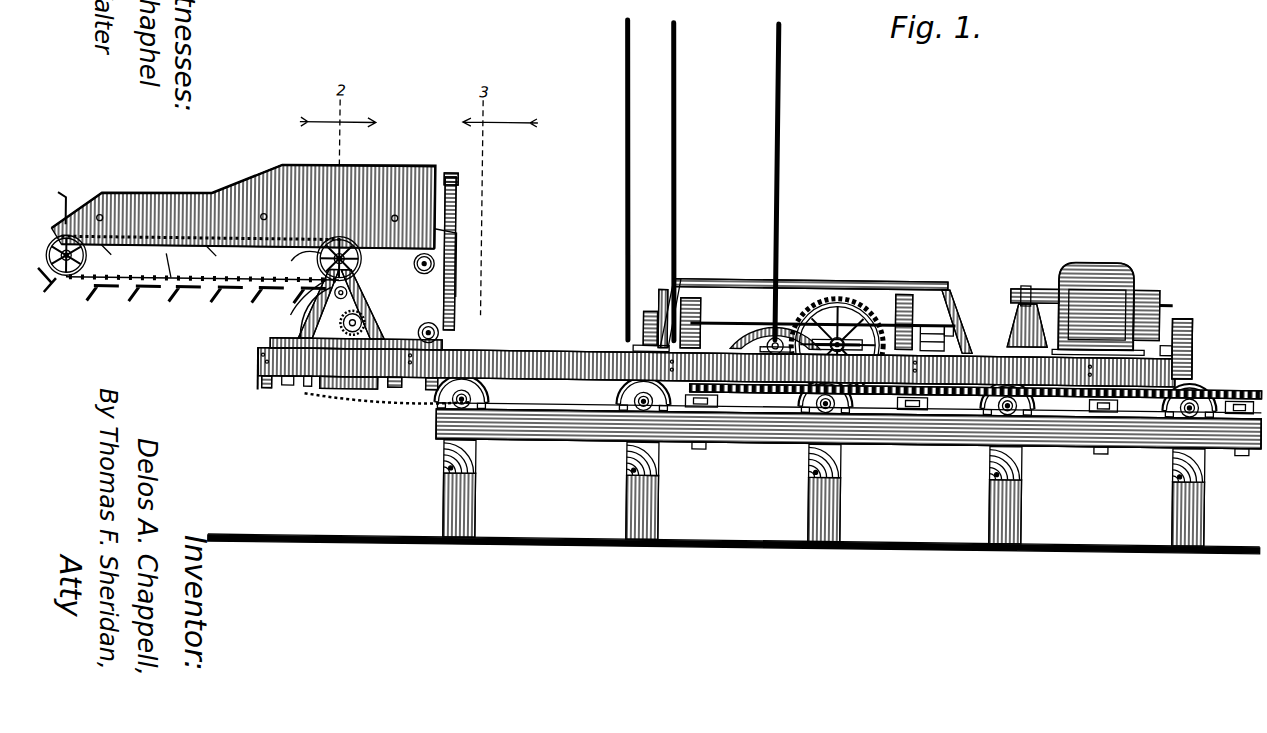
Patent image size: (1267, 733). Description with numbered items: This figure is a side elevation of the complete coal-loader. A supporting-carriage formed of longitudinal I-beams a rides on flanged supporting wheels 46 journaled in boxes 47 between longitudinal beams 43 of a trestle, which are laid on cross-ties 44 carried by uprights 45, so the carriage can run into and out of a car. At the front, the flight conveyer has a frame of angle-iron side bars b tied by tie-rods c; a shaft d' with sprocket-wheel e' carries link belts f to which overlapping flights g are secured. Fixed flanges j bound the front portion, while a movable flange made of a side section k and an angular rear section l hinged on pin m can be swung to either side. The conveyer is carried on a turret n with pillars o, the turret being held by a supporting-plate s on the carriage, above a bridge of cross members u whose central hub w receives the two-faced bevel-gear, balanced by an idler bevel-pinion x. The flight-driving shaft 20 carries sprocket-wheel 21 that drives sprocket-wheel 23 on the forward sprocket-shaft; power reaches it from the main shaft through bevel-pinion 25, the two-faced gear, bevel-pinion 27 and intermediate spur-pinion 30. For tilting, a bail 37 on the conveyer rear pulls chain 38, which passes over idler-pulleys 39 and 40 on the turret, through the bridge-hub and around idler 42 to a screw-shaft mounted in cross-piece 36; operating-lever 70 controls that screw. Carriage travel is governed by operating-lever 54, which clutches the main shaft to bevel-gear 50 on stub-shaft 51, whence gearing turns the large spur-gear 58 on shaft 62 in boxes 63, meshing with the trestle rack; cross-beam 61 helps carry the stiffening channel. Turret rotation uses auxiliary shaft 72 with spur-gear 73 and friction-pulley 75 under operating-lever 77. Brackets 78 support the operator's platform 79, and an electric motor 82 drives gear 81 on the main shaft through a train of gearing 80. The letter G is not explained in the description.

The I-beam a is at (1180, 365).
The side bar b is at (255, 252).
The tie-rod c is at (160, 259).
The rotatable shaft d' is at (463, 260).
The sprocket-wheel e' is at (458, 264).
The link belt f is at (433, 290).
The flight g is at (112, 300).
The fixed flange j is at (136, 212).
The side section of movable flange k is at (266, 180).
The angular rear section of movable flange l is at (402, 182).
The pin m is at (454, 170).
The turret n is at (258, 385).
The pillar o is at (352, 300).
The supporting-plate s is at (335, 350).
The cross member u is at (430, 393).
The central hub portion w is at (330, 393).
The idler bevel-pinion x is at (288, 390).
The conveyor guide G is at (297, 260).
The flight-driving shaft 20 is at (337, 244).
The sprocket-wheel 21 is at (290, 288).
The sprocket-wheel 23 is at (66, 283).
The bevel-pinion 25 is at (395, 391).
The bevel-pinion 27 is at (300, 330).
The intermediate spur-pinion 30 is at (295, 318).
The cross-piece 36 is at (643, 320).
The bail 37 is at (456, 296).
The chain 38 is at (345, 420).
The idler-pulley 39 is at (438, 340).
The idler-pulley 40 is at (364, 320).
The idler 42 is at (355, 403).
The beam 43 is at (1100, 450).
The cross-tie 44 is at (1226, 468).
The upright 45 is at (1174, 514).
The supporting flanged wheel 46 is at (1198, 386).
The box 47 is at (1186, 412).
The bevel-gear 50 is at (760, 336).
The stub-shaft 51 is at (760, 394).
The operating-lever 54 is at (778, 182).
The spur-gear 58 is at (838, 300).
The cross-beam 61 is at (946, 338).
The shaft 62 is at (847, 336).
The box 63 is at (829, 340).
The operating-lever 70 is at (622, 159).
The auxiliary shaft 72 is at (722, 322).
The spur-gear 73 is at (904, 292).
The friction-pulley 75 is at (682, 300).
The operating-lever 77 is at (675, 166).
The bracket 78 is at (958, 300).
The platform 79 is at (945, 282).
The train of gearing 80 is at (1190, 316).
The gear 81 is at (1174, 346).
The electric motor 82 is at (1098, 258).